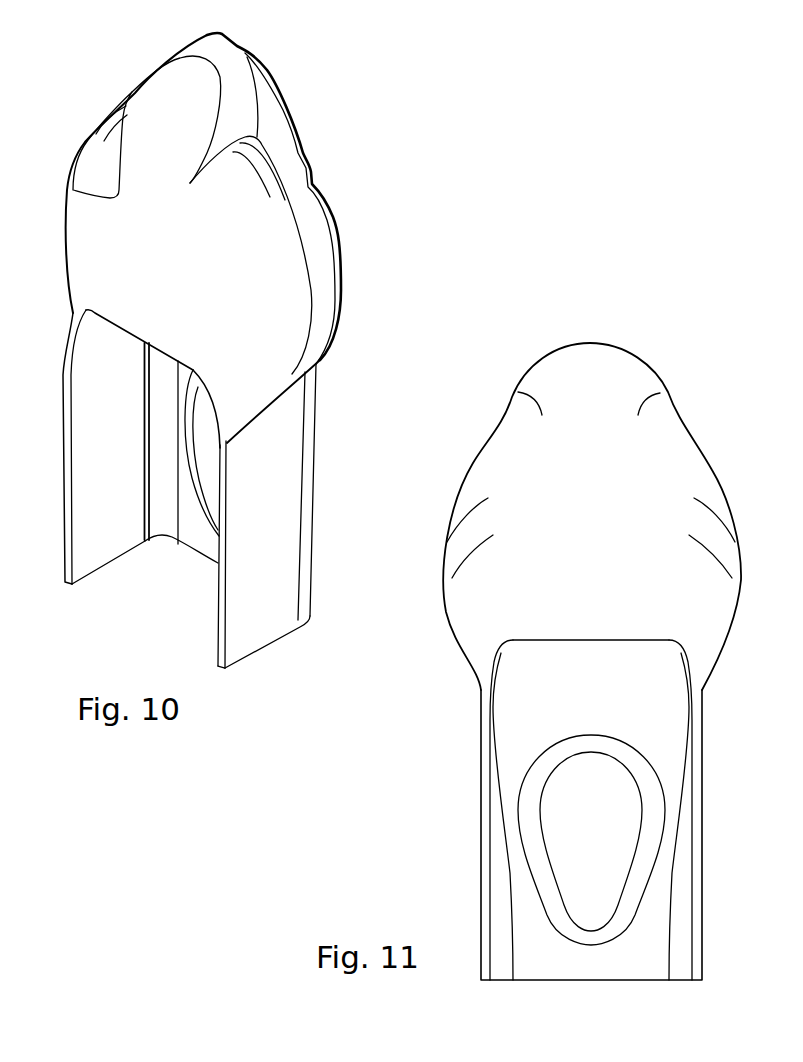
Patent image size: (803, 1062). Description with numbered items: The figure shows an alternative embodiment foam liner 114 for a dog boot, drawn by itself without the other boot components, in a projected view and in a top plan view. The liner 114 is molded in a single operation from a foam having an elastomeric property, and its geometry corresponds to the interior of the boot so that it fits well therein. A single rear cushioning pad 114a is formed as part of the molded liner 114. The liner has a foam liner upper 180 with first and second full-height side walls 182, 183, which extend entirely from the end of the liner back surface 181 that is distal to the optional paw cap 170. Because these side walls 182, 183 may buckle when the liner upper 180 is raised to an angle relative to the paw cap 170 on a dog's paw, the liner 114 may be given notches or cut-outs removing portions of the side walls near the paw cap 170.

In FIG. 10, the molded liner 114 is at (308, 53).
In FIG. 11, the molded liner 114 is at (682, 325).
In FIG. 11, the rear cushioning pad 114a is at (623, 827).
In FIG. 10, the paw cap 170 is at (112, 133).
In FIG. 11, the paw cap 170 is at (603, 390).
In FIG. 10, the foam liner upper 180 is at (219, 496).
In FIG. 11, the foam liner upper 180 is at (581, 825).
In FIG. 10, the liner back surface 181 is at (193, 533).
In FIG. 11, the liner back surface 181 is at (591, 810).
In FIG. 10, the first side wall 182 is at (290, 575).
In FIG. 11, the first side wall 182 is at (677, 878).
In FIG. 10, the second side wall 183 is at (125, 474).
In FIG. 11, the second side wall 183 is at (481, 878).